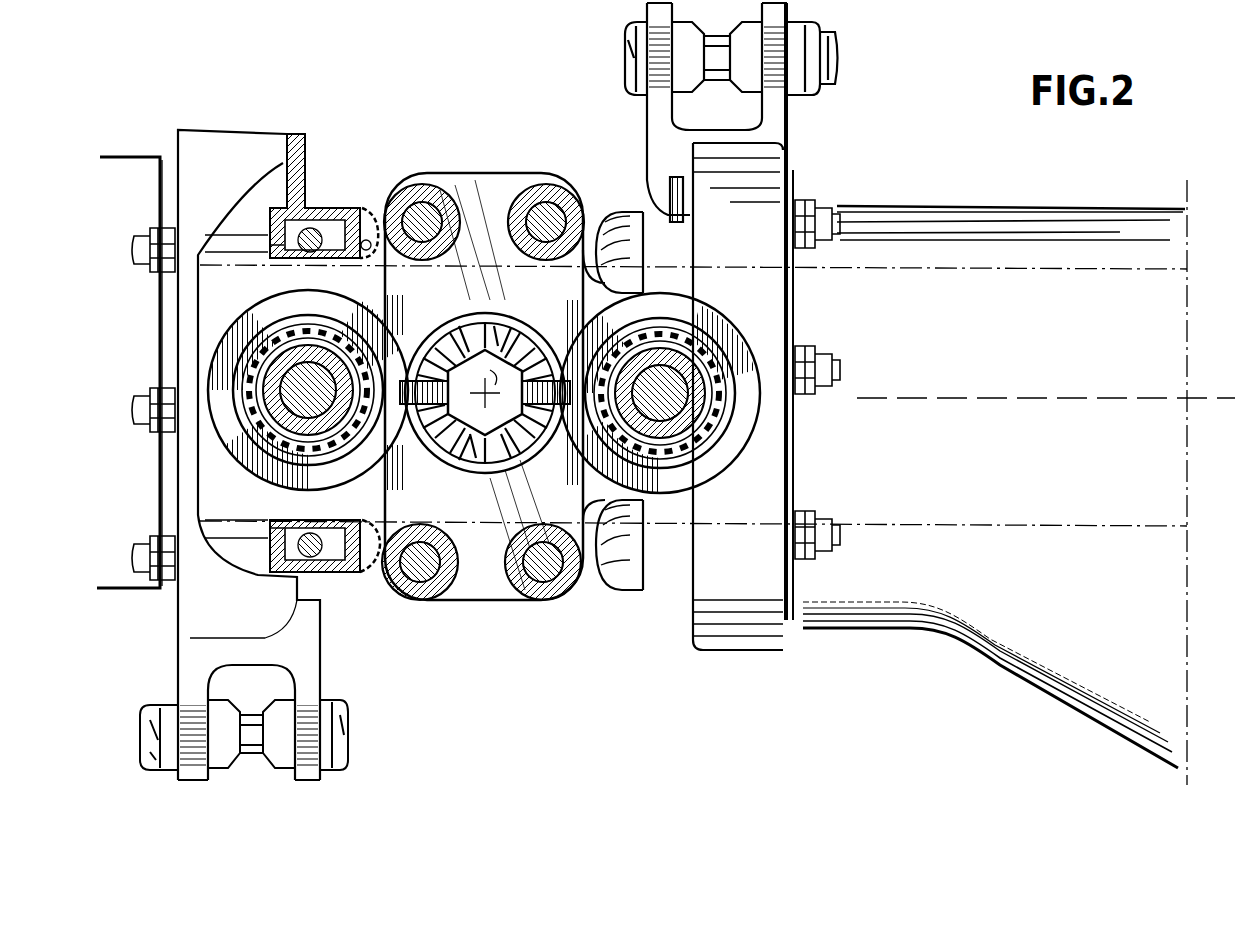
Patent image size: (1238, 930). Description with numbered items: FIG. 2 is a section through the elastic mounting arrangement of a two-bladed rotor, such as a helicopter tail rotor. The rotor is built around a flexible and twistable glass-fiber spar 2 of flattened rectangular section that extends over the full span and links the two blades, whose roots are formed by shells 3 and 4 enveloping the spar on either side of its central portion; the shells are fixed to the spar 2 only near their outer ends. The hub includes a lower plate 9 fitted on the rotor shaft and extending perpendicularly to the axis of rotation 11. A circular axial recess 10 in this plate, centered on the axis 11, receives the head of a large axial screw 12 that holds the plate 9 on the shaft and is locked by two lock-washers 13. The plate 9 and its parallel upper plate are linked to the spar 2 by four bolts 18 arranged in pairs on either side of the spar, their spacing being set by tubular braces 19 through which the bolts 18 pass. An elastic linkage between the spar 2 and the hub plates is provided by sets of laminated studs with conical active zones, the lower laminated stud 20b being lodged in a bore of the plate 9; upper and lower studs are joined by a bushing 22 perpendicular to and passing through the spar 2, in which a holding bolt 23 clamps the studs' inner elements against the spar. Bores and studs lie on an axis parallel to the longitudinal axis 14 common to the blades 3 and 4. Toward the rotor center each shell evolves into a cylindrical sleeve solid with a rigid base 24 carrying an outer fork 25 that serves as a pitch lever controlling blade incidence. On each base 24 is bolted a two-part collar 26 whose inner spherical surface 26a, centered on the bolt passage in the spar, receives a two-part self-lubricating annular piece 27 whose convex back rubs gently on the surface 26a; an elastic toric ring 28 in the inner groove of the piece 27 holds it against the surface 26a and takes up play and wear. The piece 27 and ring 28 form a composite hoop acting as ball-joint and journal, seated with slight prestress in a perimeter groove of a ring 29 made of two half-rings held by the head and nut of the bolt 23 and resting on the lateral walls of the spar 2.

The spar 2 is at (985, 268).
The shell 3 is at (990, 685).
The shell 4 is at (112, 575).
The lower plate 9 is at (514, 386).
The circular axial recess 10 is at (487, 407).
The axis of rotation 11 is at (485, 392).
The axial screw 12 is at (470, 445).
The lock-washer 13 is at (355, 310).
The longitudinal axis 14 is at (1205, 398).
The bolt 18 is at (560, 185).
The tubular brace 19 is at (555, 195).
The lower laminated stud 20b is at (250, 345).
The bushing 22 is at (690, 380).
The holding bolt 23 is at (690, 402).
The rigid base 24 is at (738, 396).
The outer fork 25 is at (785, 118).
The collar 26 is at (305, 208).
The inner spherical surface 26a is at (265, 228).
The annular piece 27 is at (325, 572).
The elastic toric ring 28 is at (290, 520).
The ring 29 is at (358, 258).